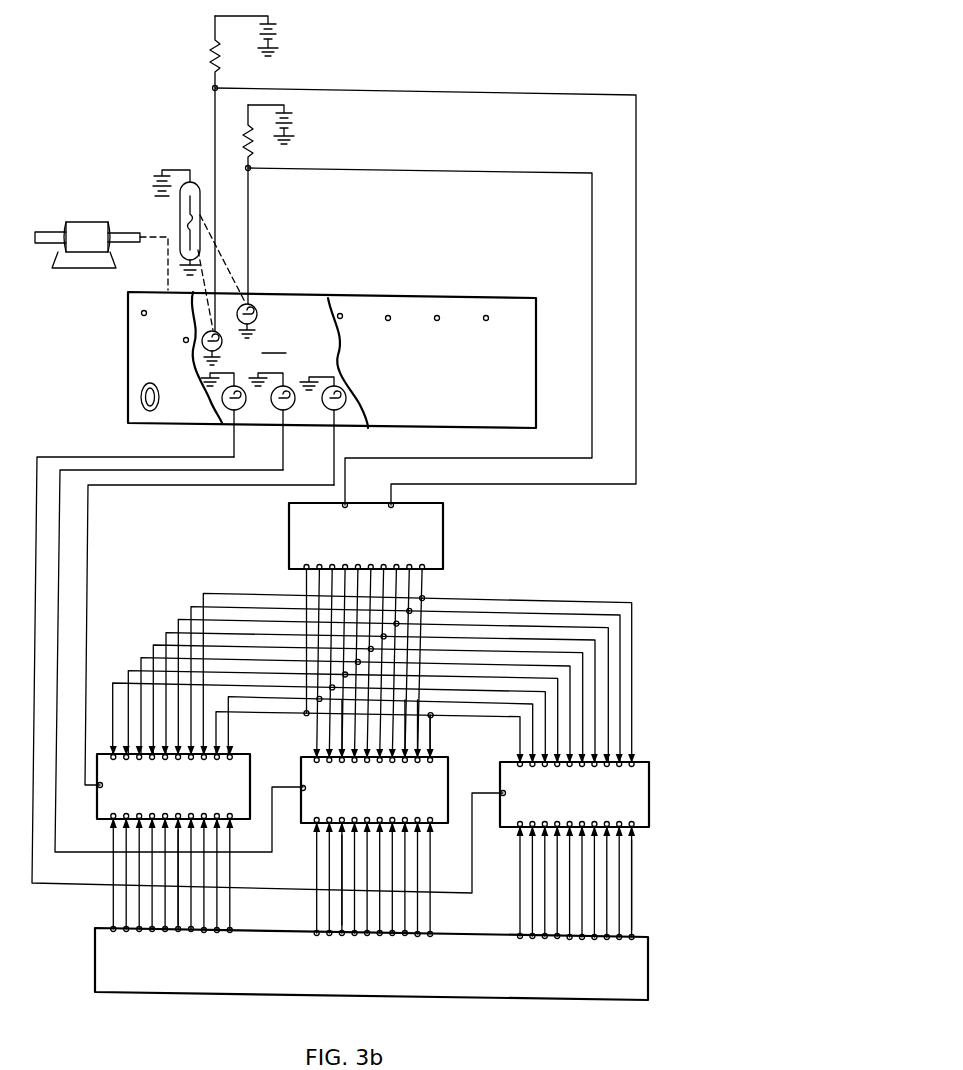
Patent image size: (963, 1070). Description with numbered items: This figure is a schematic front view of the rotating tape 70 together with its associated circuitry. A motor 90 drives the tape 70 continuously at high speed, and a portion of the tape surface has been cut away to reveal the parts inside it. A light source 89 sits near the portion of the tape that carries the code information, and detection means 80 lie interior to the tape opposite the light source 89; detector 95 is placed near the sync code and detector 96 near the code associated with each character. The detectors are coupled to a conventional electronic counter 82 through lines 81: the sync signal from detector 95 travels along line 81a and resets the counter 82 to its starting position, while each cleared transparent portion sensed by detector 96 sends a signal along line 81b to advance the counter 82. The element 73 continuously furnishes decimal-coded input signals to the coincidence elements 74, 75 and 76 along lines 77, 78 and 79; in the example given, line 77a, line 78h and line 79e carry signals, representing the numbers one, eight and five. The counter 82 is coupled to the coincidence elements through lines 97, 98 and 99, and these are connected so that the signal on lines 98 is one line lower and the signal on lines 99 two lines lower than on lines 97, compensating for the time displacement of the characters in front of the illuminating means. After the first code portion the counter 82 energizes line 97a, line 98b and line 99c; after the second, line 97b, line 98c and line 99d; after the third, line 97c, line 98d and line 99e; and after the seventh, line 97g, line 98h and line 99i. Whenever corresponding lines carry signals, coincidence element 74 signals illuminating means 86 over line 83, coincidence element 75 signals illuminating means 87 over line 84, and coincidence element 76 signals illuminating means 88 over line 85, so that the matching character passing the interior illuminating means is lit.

The tape 70 is at (414, 296).
The element 73 is at (88, 976).
The coincidence element 74 is at (493, 830).
The coincidence element 75 is at (296, 828).
The coincidence element 76 is at (97, 806).
The lines 77 is at (509, 921).
The line 77a is at (632, 904).
The lines 78 is at (306, 921).
The line 78h is at (346, 873).
The lines 79 is at (98, 921).
The line 79e is at (180, 911).
The detection means 80 is at (274, 344).
The lines 81 is at (444, 296).
The line 81a is at (636, 298).
The line 81b is at (421, 336).
The counter 82 is at (371, 501).
The line 83 is at (37, 567).
The line 84 is at (60, 598).
The line 85 is at (88, 624).
The illuminating means 86 is at (237, 385).
The illuminating means 87 is at (285, 385).
The illuminating means 88 is at (336, 385).
The light source 89 is at (180, 218).
The motor 90 is at (69, 222).
The detector 95 is at (221, 344).
The detector 96 is at (258, 314).
The lines 97 is at (511, 751).
The line 97a is at (634, 688).
The line 97b is at (620, 712).
The line 97c is at (608, 734).
The line 97g is at (595, 752).
The lines 98 is at (308, 751).
The line 98b is at (407, 736).
The line 98c is at (407, 750).
The line 98d is at (446, 760).
The line 98h is at (342, 726).
The lines 99 is at (107, 751).
The line 99c is at (203, 594).
The line 99d is at (197, 592).
The line 99e is at (179, 619).
The line 99i is at (128, 670).